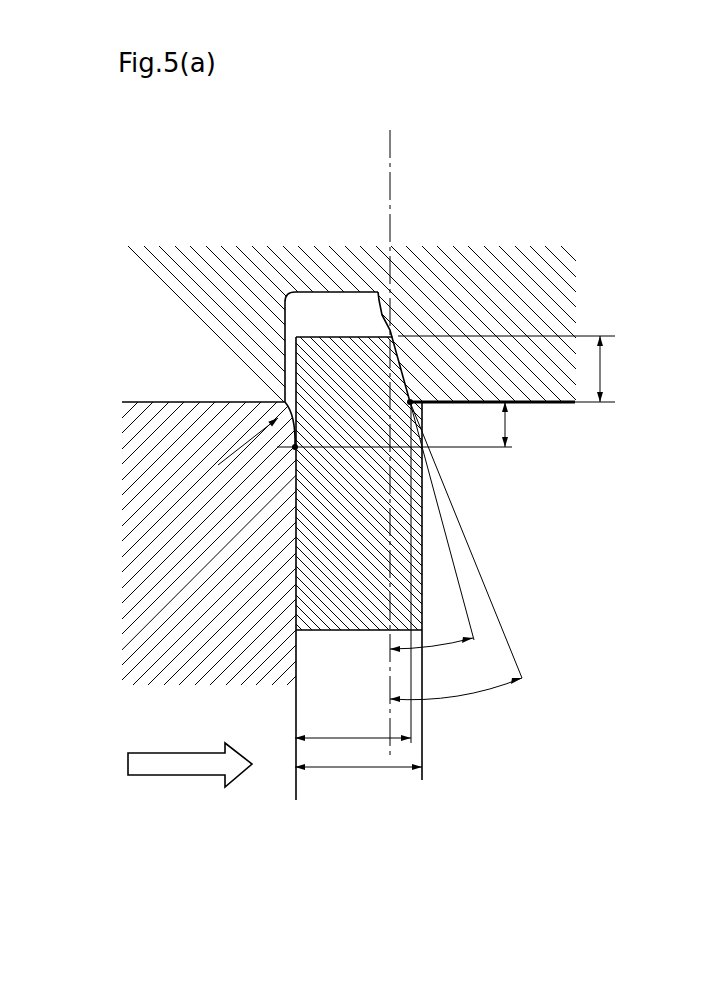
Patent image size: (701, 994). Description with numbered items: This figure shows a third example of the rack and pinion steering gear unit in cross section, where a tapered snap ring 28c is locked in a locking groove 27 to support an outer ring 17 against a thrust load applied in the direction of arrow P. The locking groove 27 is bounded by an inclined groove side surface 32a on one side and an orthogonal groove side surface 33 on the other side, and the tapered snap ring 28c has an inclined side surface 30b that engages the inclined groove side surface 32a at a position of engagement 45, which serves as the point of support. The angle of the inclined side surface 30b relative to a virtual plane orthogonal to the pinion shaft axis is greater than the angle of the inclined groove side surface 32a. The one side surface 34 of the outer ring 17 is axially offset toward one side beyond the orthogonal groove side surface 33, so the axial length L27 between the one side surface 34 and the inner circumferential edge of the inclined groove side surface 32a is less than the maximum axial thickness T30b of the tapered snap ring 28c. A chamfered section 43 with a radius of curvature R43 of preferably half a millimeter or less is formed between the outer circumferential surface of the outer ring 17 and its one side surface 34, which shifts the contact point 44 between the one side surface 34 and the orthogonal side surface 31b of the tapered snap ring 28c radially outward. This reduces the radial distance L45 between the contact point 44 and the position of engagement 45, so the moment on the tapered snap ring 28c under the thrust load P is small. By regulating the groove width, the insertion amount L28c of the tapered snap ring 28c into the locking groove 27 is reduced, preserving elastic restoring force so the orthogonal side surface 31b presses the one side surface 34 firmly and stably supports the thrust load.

The locking groove 27 is at (324, 292).
The orthogonal groove side surface 33 is at (285, 324).
The inclined groove side surface 32a is at (389, 320).
The inclined side surface 30b is at (397, 357).
The position of engagement 45 is at (413, 403).
The chamfered section 43 is at (283, 400).
The radius of curvature R43 is at (278, 418).
The contact point 44 is at (292, 448).
The outer ring 17 is at (137, 600).
The orthogonal side surface 31b is at (292, 548).
The tapered snap ring 28c is at (372, 631).
The one side surface 34 is at (297, 648).
The insertion amount L28c is at (603, 367).
The radial distance L45 is at (510, 425).
The axial length L27 is at (333, 738).
The thickness dimension T30b is at (358, 768).
The thrust load direction arrow P is at (165, 776).